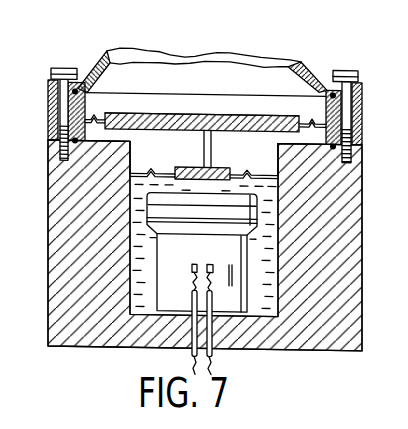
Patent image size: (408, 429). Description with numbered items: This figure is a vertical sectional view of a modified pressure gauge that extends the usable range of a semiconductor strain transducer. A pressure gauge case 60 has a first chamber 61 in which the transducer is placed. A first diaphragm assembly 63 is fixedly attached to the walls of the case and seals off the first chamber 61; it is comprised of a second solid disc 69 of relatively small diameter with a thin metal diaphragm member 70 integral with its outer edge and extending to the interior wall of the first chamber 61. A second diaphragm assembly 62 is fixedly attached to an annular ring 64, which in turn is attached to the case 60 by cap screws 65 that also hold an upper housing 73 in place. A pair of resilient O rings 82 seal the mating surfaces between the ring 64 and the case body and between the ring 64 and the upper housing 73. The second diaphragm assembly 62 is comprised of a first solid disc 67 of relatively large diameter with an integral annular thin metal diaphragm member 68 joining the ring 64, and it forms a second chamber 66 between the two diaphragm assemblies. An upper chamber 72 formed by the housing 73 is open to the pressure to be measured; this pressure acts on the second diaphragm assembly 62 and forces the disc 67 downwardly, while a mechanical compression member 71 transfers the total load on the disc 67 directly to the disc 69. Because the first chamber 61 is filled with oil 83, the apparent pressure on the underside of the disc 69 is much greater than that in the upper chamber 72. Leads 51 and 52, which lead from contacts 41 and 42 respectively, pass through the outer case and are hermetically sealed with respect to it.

The contact 41 is at (195, 260).
The contact 42 is at (212, 260).
The lead 51 is at (190, 285).
The lead 52 is at (213, 287).
The pressure gauge case 60 is at (46, 255).
The first chamber 61 is at (267, 313).
The second diaphragm assembly 62 is at (182, 111).
The first diaphragm assembly 63 is at (258, 158).
The annular ring 64 is at (50, 125).
The cap screws 65 is at (60, 68).
The second chamber 66 is at (128, 134).
The first solid disc 67 is at (216, 116).
The annular thin metal diaphragm member 68 is at (95, 118).
The second solid disc 69 is at (190, 164).
The thin metal diaphragm member 70 is at (158, 166).
The mechanical compression member 71 is at (212, 152).
The upper chamber 72 is at (215, 84).
The upper housing 73 is at (303, 58).
The resilient O rings 82 is at (66, 88).
The oil 83 is at (143, 267).